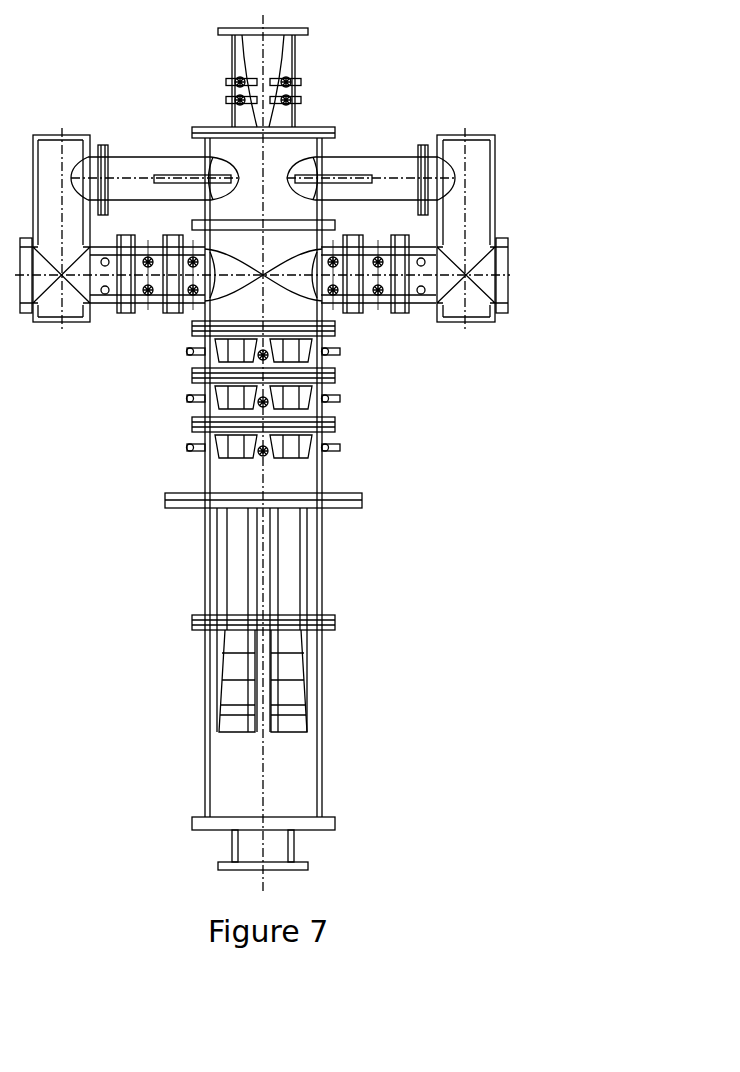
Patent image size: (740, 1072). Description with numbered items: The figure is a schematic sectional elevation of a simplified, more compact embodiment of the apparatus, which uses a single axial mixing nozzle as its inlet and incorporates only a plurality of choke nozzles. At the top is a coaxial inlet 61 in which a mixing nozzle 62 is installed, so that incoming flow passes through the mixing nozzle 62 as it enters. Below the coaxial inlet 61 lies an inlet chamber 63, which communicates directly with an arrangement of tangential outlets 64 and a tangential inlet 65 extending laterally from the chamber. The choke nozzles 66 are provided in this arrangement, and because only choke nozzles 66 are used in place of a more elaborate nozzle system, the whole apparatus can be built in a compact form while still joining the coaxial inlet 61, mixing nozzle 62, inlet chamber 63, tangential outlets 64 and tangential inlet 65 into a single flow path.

The coaxial inlet 61 is at (233, 53).
The mixing nozzle 62 is at (265, 65).
The inlet chamber 63 is at (263, 165).
The tangential outlets 64 is at (162, 170).
The tangential inlet 65 is at (158, 277).
The choke nozzles 66 is at (393, 287).